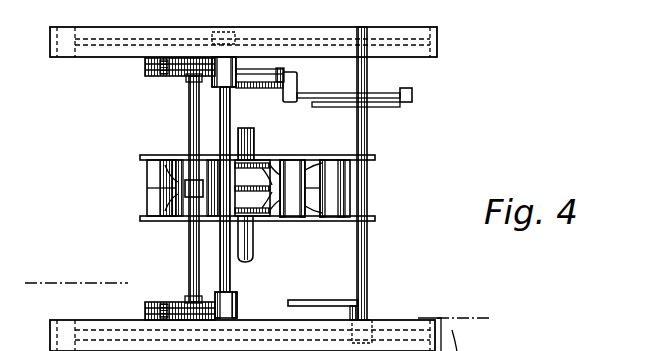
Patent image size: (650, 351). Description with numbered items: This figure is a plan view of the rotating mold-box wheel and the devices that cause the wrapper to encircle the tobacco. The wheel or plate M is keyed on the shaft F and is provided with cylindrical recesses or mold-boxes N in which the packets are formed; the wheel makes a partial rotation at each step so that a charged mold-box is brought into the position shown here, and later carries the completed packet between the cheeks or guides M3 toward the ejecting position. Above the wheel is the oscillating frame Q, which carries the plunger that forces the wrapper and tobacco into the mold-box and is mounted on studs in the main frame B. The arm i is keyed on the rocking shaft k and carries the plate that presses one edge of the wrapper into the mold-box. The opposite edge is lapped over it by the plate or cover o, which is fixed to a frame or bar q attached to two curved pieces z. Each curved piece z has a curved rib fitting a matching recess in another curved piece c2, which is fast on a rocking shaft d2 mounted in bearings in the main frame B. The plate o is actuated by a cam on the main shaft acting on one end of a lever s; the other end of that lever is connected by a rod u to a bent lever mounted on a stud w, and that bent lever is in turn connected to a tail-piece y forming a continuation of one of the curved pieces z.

The main frame B is at (253, 189).
The rocking shaft k is at (368, 191).
The curved piece c2 is at (145, 63).
The curved piece z is at (163, 76).
The stud w is at (240, 40).
The rocking shaft d2 is at (232, 110).
The tail-piece y is at (262, 69).
The rod u is at (354, 91).
The lever s is at (341, 107).
The shaft F is at (254, 142).
The mold-box N is at (257, 188).
The plate o is at (186, 165).
The frame or bar q is at (187, 116).
The oscillating frame Q is at (185, 219).
The wheel or plate M is at (253, 188).
The cheeks or guides M3 is at (283, 230).
The arm i is at (316, 300).